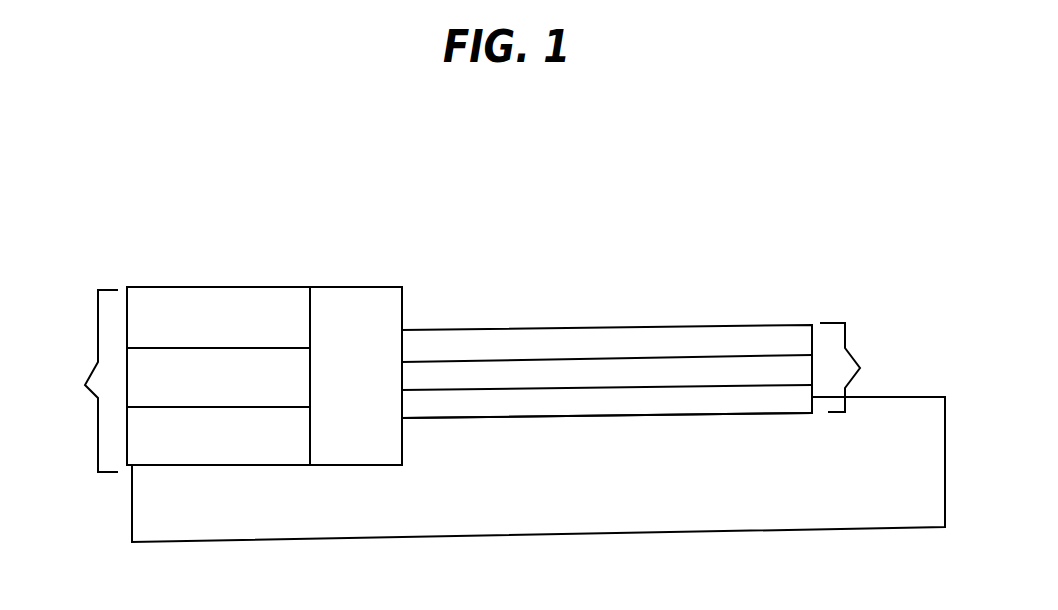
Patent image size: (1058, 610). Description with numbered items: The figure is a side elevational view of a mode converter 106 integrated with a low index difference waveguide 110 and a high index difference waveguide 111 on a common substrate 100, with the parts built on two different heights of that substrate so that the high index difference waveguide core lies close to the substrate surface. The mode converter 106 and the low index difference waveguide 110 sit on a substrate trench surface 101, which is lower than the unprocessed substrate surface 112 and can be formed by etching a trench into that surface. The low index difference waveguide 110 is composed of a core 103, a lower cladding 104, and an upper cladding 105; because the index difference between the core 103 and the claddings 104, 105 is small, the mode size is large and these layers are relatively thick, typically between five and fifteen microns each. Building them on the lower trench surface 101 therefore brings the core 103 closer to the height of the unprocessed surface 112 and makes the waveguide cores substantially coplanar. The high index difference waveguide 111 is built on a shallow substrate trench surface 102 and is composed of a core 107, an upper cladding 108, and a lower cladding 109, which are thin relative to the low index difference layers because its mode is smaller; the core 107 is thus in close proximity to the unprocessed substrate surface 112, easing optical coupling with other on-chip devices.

The substrate 100 is at (517, 489).
The substrate trench surface 101 is at (268, 468).
The substrate trench surface 102 is at (640, 420).
The core 103 is at (181, 397).
The lower cladding 104 is at (181, 454).
The upper cladding 105 is at (181, 334).
The mode converter 106 is at (334, 395).
The core 107 is at (607, 376).
The upper cladding 108 is at (607, 346).
The lower cladding 109 is at (607, 404).
The low index difference waveguide 110 is at (79, 381).
The high index difference waveguide 111 is at (862, 367).
The unprocessed substrate surface 112 is at (922, 398).